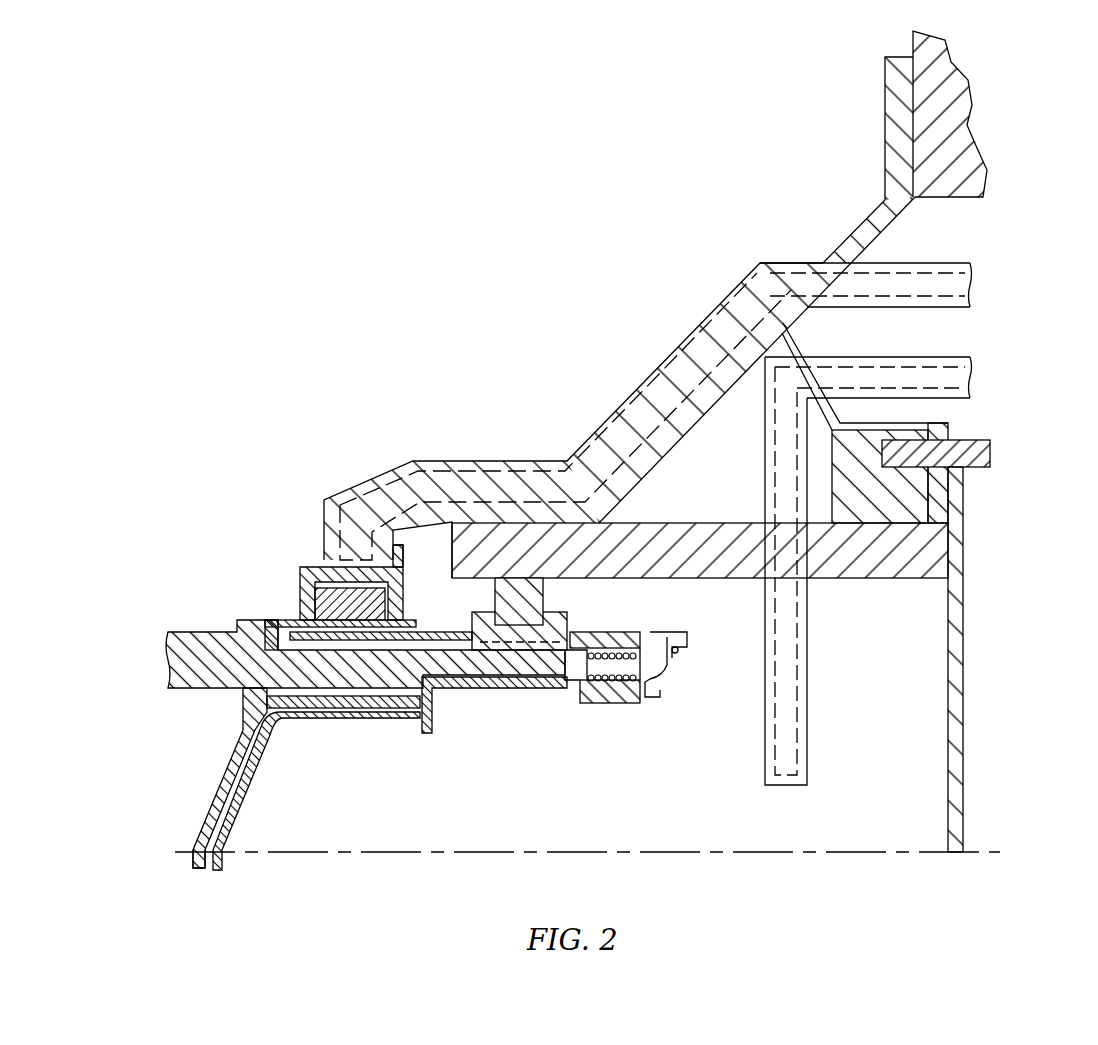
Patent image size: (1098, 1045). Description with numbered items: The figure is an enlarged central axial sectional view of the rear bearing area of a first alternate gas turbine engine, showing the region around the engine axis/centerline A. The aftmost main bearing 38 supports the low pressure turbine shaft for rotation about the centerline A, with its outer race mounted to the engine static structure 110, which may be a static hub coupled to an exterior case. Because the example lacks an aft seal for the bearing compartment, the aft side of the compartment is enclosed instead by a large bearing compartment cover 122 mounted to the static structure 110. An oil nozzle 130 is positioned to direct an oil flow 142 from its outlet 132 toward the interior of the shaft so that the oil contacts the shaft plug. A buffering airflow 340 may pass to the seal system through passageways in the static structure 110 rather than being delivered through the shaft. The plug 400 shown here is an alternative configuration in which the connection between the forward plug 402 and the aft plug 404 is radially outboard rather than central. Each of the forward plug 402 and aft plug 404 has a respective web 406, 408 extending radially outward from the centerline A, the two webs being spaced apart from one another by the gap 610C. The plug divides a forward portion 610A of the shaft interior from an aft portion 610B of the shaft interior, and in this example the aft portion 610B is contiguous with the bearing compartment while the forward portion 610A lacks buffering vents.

The static structure 110 is at (637, 365).
The buffering airflow 340 is at (957, 286).
The oil flow 142 is at (957, 377).
The oil nozzle 130 is at (823, 759).
The outlet 132 is at (767, 742).
The bearing compartment cover 122 is at (978, 655).
The bearing system 38 is at (572, 612).
The plug 400 is at (256, 778).
The forward plug 402 is at (200, 802).
The aft plug 404 is at (270, 765).
The web 406 is at (207, 817).
The web 408 is at (237, 797).
The forward portion of the shaft interior 610A is at (218, 736).
The aft portion of the shaft interior 610B is at (525, 834).
The gap 610C is at (212, 878).
The axis/centerline A is at (390, 858).